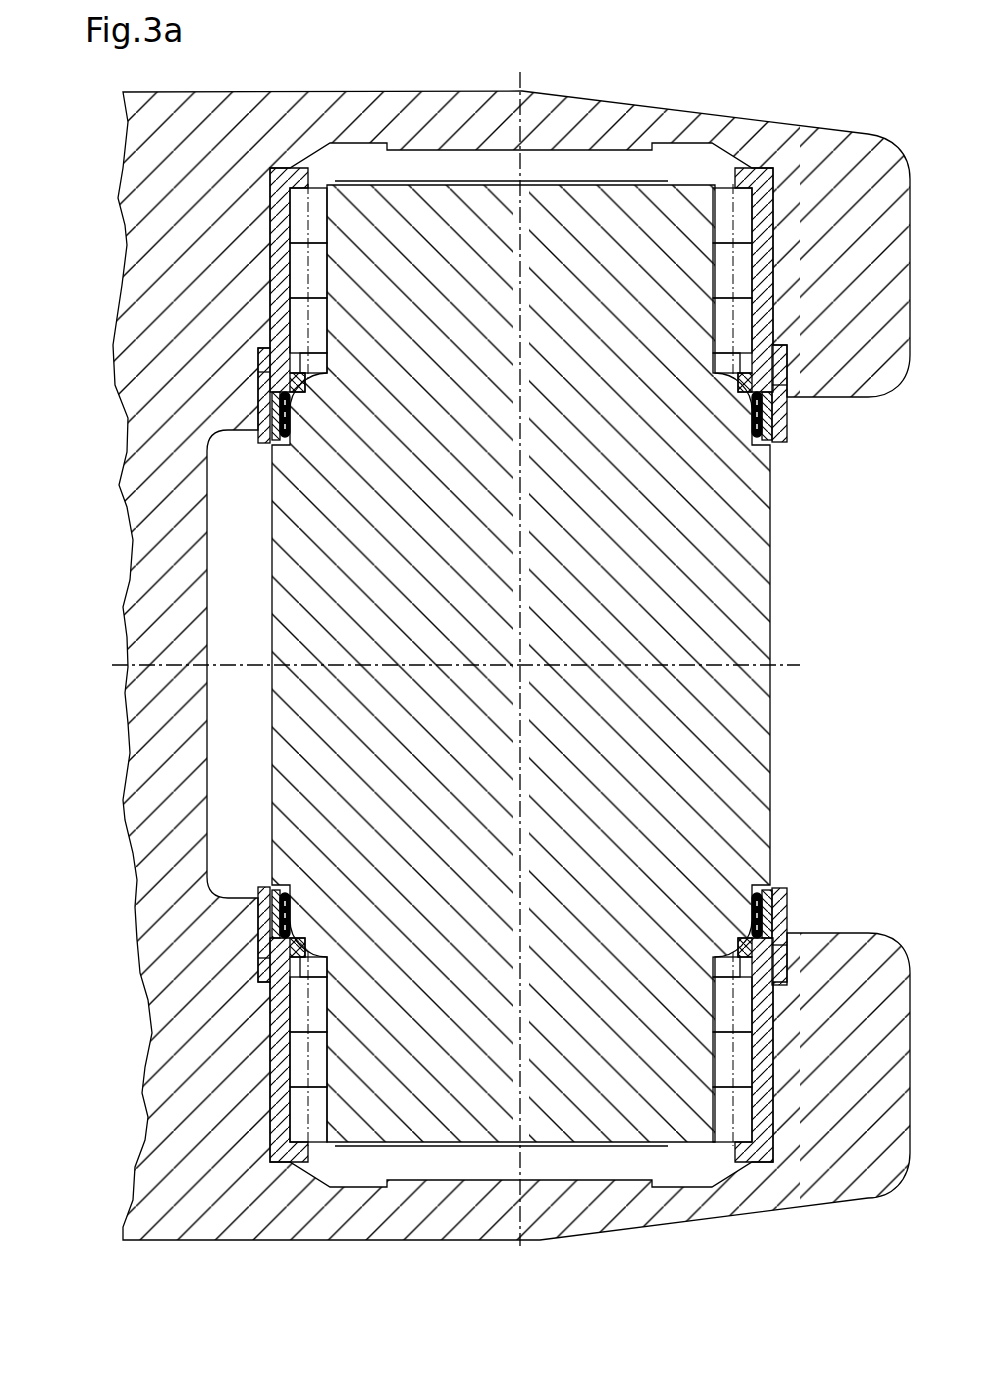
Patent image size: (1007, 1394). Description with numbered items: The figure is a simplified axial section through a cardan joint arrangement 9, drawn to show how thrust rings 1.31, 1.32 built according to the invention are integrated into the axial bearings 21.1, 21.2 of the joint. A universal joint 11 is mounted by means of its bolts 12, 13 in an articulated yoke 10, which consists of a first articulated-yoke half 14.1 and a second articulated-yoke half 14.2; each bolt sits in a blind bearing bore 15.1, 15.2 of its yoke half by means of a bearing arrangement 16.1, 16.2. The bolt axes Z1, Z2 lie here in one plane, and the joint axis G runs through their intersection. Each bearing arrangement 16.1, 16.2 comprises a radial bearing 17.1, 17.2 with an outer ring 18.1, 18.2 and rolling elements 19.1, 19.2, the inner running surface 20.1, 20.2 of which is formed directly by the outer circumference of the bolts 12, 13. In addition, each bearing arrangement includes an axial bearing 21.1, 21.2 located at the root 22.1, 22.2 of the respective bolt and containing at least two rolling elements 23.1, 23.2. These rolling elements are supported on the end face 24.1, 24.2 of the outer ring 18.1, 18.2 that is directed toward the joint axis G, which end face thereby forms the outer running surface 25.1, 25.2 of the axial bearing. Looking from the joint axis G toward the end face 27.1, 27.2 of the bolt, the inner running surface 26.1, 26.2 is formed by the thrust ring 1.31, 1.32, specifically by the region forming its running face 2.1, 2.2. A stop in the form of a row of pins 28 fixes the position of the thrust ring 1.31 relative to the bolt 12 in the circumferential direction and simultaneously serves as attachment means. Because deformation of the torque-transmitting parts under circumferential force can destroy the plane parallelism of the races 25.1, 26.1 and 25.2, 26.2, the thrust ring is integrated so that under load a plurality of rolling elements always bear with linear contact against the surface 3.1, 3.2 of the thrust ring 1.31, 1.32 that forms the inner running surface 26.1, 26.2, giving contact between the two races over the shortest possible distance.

The cardan joint arrangement 9 is at (527, 66).
The articulated yoke 10 is at (761, 142).
The universal joint 11 is at (735, 594).
The bolt 12 is at (735, 525).
The bolt 13 is at (750, 732).
The first articulated-yoke half 14.1 is at (865, 175).
The second articulated-yoke half 14.2 is at (860, 1120).
The blind bearing bore 15.1 is at (774, 168).
The blind bearing bore 15.2 is at (770, 1165).
The bearing arrangement 16.1 is at (721, 160).
The bearing arrangement 16.2 is at (719, 1174).
The radial bearing 17.1 is at (312, 186).
The radial bearing 17.2 is at (290, 1177).
The outer ring 18.1 is at (286, 156).
The outer ring 18.2 is at (286, 1177).
The rolling elements 19.1 is at (310, 210).
The rolling elements 19.2 is at (315, 1120).
The inner running surface 20.1 is at (322, 190).
The inner running surface 20.2 is at (320, 1145).
The axial bearing 21.1 is at (262, 400).
The axial bearing 21.2 is at (262, 935).
The root of the bolt 22.1 is at (312, 430).
The root of the bolt 22.2 is at (312, 896).
The rolling elements 23.1 is at (790, 395).
The rolling elements 23.2 is at (790, 940).
The end face 24.1 is at (137, 355).
The end face 24.2 is at (260, 958).
The outer running surface 25.1 is at (260, 380).
The outer running surface 25.2 is at (138, 977).
The running face 2.1 is at (272, 393).
The running face 2.2 is at (272, 947).
The inner running surface 26.1 is at (173, 410).
The inner running surface 26.2 is at (173, 922).
The end face of the bolt 27.1 is at (563, 182).
The end face of the bolt 27.2 is at (563, 1148).
The stop 28 is at (282, 470).
The thrust ring 1.31 is at (766, 436).
The thrust ring 1.32 is at (786, 902).
The surface of the thrust ring 3.1 is at (745, 385).
The surface of the thrust ring 3.2 is at (742, 932).
The bolt axis Z1 is at (520, 522).
The bolt axis Z2 is at (596, 672).
The joint axis G is at (520, 660).